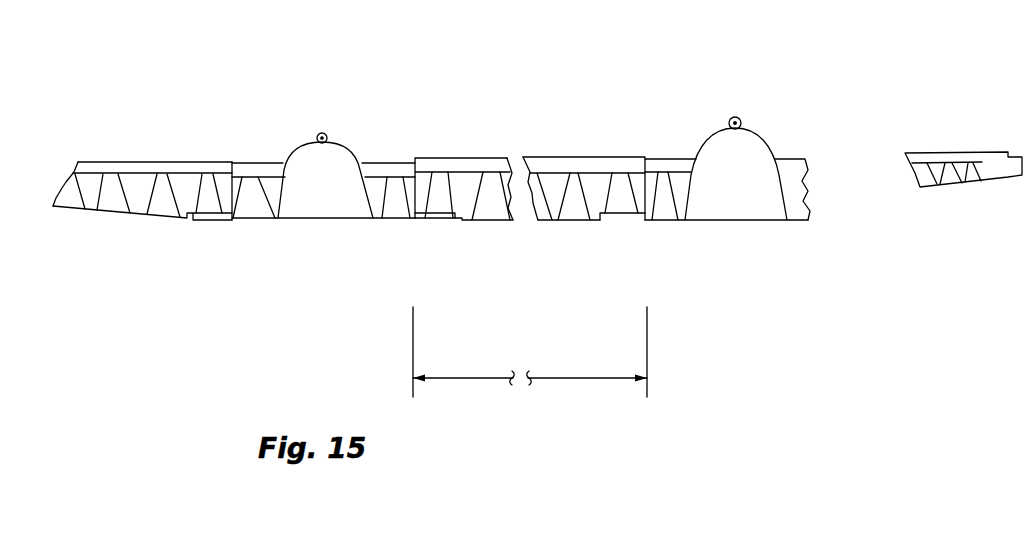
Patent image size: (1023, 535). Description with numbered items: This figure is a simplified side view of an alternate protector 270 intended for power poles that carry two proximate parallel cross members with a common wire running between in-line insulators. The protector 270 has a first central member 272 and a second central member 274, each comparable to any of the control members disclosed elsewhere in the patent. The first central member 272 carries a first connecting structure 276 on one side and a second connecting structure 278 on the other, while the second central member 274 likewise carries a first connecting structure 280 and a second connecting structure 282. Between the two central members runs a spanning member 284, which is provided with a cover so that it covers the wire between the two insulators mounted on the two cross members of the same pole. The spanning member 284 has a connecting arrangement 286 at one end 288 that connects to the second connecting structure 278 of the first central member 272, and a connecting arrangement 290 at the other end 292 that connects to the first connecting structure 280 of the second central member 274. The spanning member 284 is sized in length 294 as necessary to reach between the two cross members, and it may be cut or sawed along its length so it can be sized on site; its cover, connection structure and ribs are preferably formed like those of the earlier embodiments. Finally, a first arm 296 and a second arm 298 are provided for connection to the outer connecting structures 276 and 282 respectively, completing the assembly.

The protector 270 is at (441, 70).
The first central member 272 is at (336, 145).
The second central member 274 is at (708, 140).
The first connecting structure 276 is at (248, 163).
The second connecting structure 278 is at (368, 163).
The first connecting structure 280 is at (657, 159).
The second connecting structure 282 is at (790, 159).
The spanning member 284 is at (465, 158).
The connecting arrangement 286 is at (421, 204).
The one end 288 is at (373, 230).
The connecting arrangement 290 is at (635, 157).
The other end 292 is at (603, 232).
The length 294 is at (453, 378).
The first arm 296 is at (94, 162).
The second arm 298 is at (938, 152).